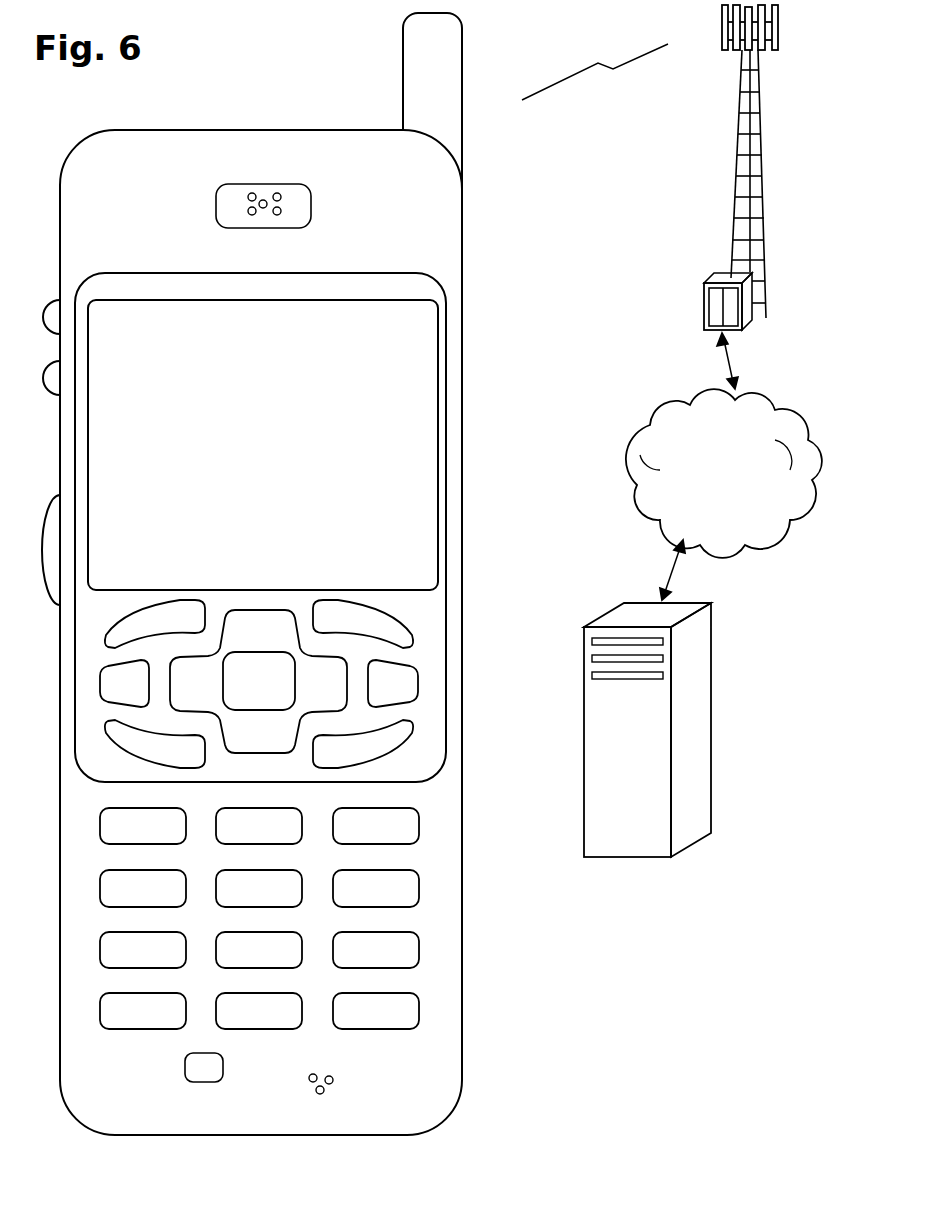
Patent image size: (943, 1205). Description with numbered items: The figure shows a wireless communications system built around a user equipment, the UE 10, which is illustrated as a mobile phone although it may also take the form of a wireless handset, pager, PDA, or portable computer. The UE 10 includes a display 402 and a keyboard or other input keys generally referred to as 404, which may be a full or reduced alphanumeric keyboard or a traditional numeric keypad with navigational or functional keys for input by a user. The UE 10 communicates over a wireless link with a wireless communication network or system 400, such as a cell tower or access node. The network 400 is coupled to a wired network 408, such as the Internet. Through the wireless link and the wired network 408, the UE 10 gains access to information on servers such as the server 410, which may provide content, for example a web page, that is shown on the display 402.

The UE 10 is at (112, 1134).
The wireless communication network or system 400 is at (737, 181).
The display 402 is at (438, 312).
The input keys 404 is at (469, 599).
The wired network 408 is at (645, 518).
The server 410 is at (627, 858).